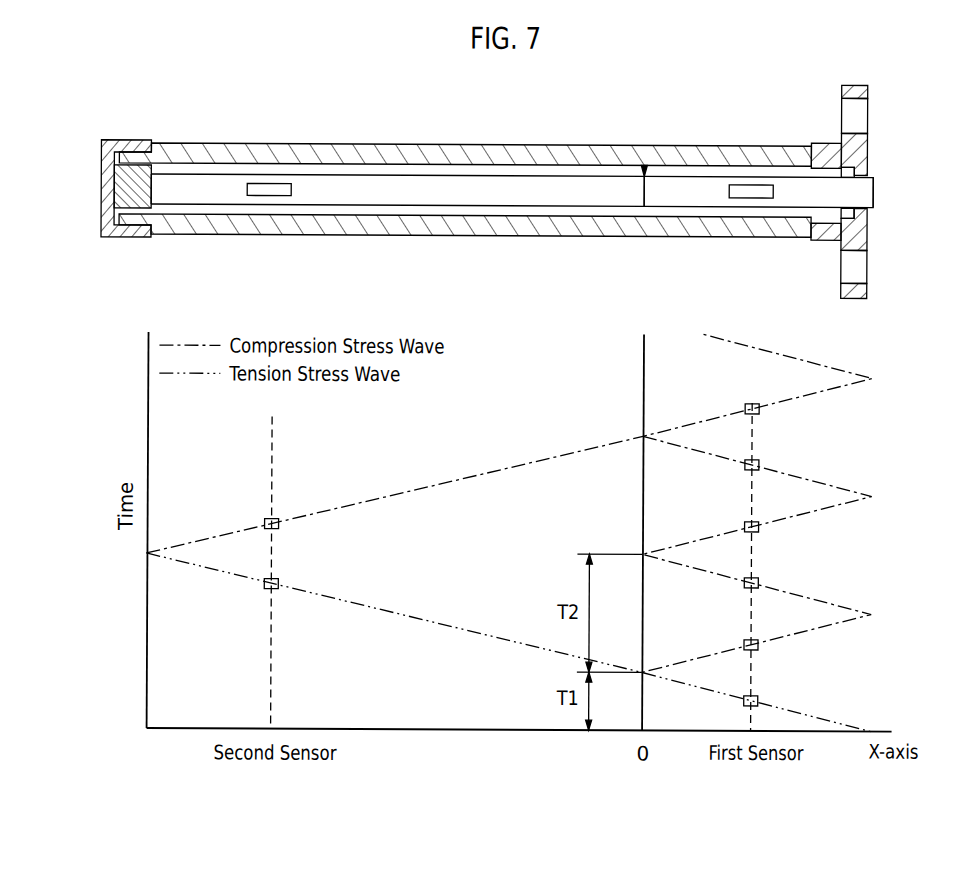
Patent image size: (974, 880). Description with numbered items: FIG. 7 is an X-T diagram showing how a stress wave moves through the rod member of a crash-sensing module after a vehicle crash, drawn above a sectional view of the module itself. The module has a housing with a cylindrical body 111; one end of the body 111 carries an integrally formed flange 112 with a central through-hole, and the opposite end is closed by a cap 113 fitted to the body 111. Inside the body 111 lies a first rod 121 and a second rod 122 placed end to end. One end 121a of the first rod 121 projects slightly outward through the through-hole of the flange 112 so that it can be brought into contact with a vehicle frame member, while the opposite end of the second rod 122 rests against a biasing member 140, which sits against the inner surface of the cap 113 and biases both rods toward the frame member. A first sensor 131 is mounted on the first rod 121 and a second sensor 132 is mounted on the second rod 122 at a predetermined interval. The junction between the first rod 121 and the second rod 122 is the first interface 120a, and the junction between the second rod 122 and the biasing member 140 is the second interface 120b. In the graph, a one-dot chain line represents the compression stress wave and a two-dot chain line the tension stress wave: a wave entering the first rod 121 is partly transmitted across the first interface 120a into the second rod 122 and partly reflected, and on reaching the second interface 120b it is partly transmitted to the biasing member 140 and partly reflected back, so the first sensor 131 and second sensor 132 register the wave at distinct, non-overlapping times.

The cylindrical body 111 is at (355, 142).
The flange 112 is at (858, 238).
The cap 113 is at (99, 164).
The first interface 120a is at (643, 163).
The second interface 120b is at (152, 180).
The first rod 121 is at (705, 185).
The one end of the first rod 121a is at (873, 196).
The second rod 122 is at (437, 186).
The first sensor 131 is at (753, 182).
The second sensor 132 is at (270, 183).
The biasing member 140 is at (118, 188).